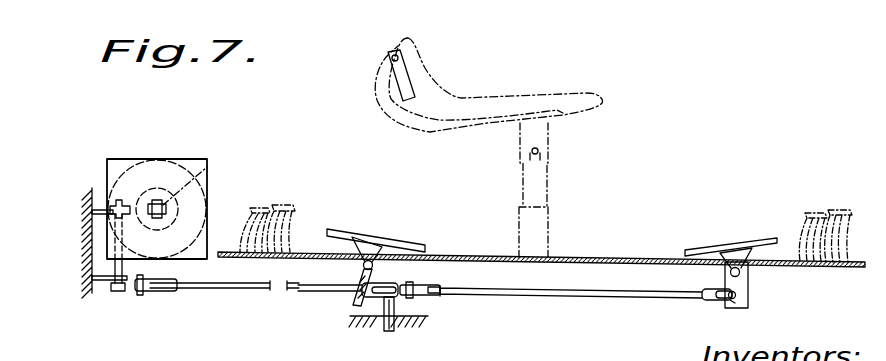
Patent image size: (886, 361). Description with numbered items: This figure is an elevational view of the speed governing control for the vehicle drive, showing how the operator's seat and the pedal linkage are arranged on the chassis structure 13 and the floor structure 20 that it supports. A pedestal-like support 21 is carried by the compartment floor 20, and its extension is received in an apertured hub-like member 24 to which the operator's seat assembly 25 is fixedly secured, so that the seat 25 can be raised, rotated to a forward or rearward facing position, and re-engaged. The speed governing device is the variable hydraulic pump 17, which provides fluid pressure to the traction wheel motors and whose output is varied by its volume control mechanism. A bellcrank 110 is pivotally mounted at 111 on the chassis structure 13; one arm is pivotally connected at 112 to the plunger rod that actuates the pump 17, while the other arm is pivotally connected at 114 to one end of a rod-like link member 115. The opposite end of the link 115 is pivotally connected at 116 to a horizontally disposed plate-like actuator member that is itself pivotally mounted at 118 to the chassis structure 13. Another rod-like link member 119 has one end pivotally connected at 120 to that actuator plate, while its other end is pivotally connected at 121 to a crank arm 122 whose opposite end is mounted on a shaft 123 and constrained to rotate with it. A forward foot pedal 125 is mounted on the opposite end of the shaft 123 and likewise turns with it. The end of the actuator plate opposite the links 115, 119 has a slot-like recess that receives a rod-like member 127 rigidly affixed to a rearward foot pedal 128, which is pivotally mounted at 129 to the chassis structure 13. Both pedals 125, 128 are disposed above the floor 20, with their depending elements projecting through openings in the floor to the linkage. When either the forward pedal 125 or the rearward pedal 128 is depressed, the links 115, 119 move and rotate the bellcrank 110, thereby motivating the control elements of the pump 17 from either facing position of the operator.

The variable hydraulic pump 17 is at (205, 131).
The bellcrank 110 is at (130, 202).
The pivotal connection of bellcrank arm to plunger rod 112 is at (207, 170).
The pivotal mounting of bellcrank 111 is at (118, 291).
The pivotal connection of bellcrank to link 114 is at (140, 292).
The rod-like link member 115 is at (240, 288).
The operator's seat assembly 25 is at (375, 95).
The hub-like member 24 is at (545, 136).
The pedestal-like support 21 is at (543, 232).
The floor structure 20 is at (638, 226).
The chassis structure 13 is at (418, 318).
The pivotal mounting of actuator plate 118 is at (388, 332).
The foot pedal 128 is at (402, 240).
The pivotal mounting of foot pedal 129 is at (362, 266).
The rod-like member 127 is at (352, 298).
The pivotal connection of link to actuator plate 116 is at (394, 285).
The pivotal connection of second link to actuator plate 120 is at (410, 284).
The rod-like link member 119 is at (652, 297).
The pivotal connection of link to crank arm 121 is at (723, 300).
The crank arm 122 is at (747, 298).
The shaft 123 is at (748, 277).
The foot pedal 125 is at (755, 210).